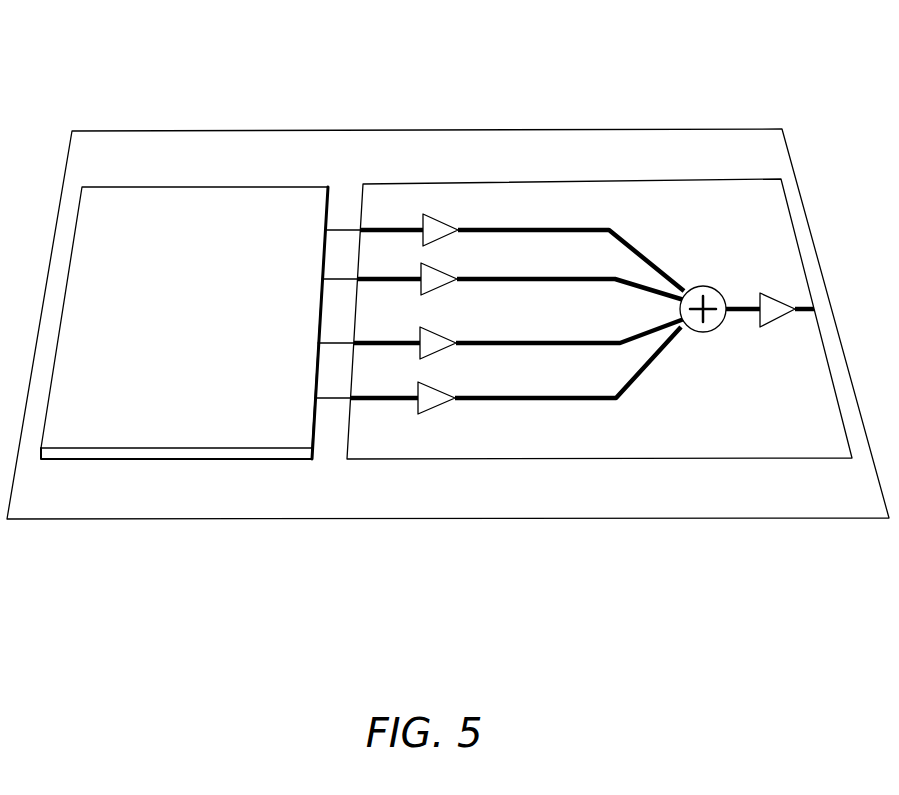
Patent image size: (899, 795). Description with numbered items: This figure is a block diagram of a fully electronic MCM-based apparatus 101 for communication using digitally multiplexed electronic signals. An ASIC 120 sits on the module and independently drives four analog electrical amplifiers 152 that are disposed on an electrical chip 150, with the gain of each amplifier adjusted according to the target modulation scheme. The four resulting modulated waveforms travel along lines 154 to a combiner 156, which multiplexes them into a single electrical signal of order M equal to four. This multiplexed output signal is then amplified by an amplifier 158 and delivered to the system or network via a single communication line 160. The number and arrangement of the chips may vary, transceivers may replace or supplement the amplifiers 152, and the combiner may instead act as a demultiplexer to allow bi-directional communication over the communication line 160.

The MCM-based apparatus 101 is at (374, 570).
The ASIC 120 is at (213, 187).
The electrical chip 150 is at (725, 460).
The analog electrical amplifiers 152 is at (419, 263).
The transmission lines 154 is at (518, 277).
The combiner 156 is at (700, 286).
The amplifier 158 is at (763, 294).
The communication line 160 is at (800, 312).